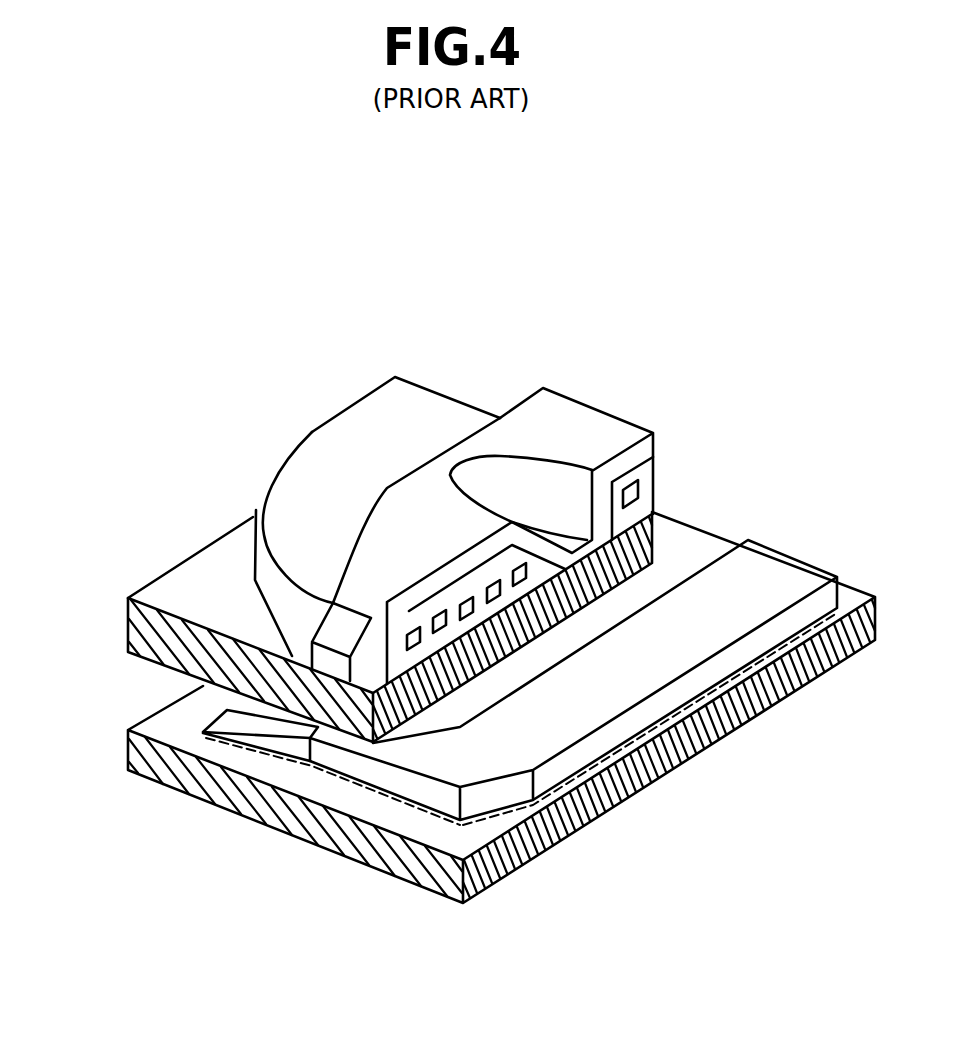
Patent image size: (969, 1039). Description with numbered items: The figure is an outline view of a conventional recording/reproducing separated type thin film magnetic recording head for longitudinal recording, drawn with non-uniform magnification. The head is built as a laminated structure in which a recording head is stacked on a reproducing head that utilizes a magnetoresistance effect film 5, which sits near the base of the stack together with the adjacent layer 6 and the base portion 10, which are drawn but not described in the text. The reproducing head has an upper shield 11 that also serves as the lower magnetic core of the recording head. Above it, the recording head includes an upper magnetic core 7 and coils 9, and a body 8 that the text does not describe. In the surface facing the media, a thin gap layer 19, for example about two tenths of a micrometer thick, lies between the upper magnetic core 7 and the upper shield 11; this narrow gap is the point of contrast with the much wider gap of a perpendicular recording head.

The magnetoresistance effect film 5 is at (320, 767).
The submount 6 is at (407, 783).
The upper magnetic core 7 is at (600, 448).
The lens 8 is at (327, 462).
The coils 9 is at (650, 735).
The base substrate 10 is at (582, 815).
The upper shield 11 is at (133, 638).
The gap layer 19 is at (168, 595).